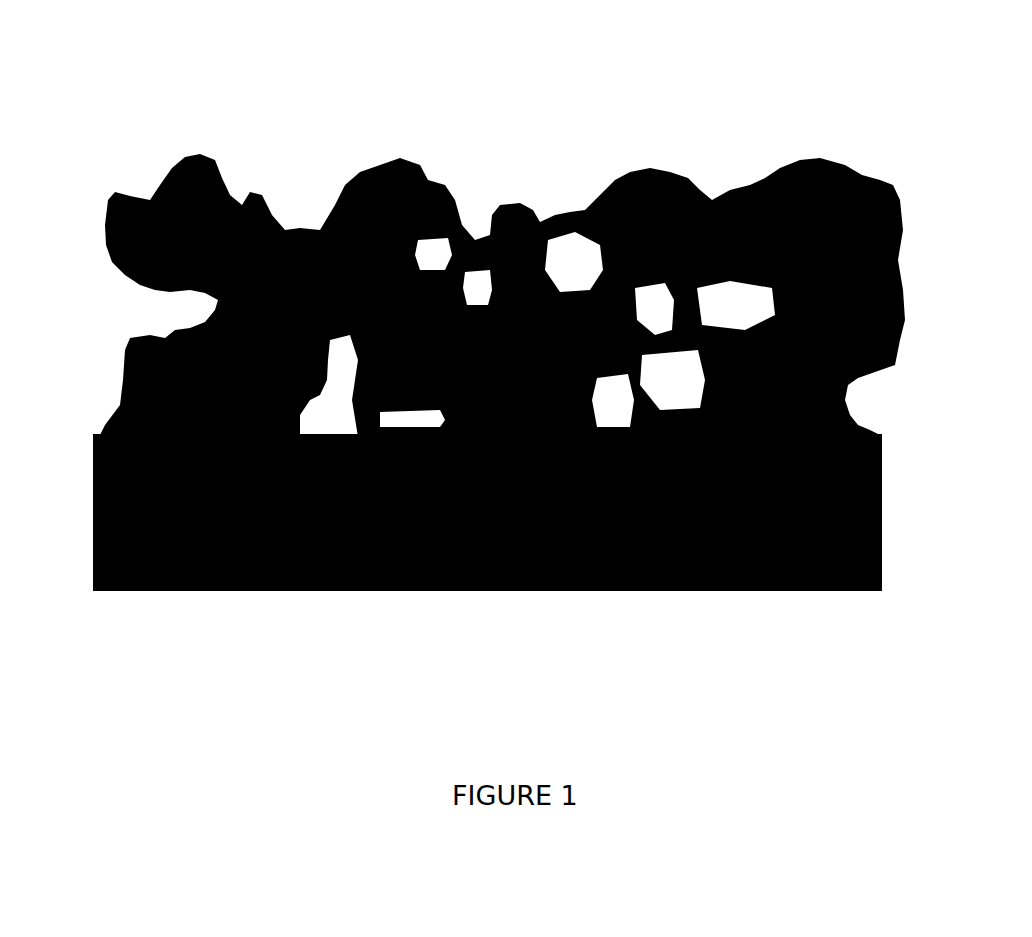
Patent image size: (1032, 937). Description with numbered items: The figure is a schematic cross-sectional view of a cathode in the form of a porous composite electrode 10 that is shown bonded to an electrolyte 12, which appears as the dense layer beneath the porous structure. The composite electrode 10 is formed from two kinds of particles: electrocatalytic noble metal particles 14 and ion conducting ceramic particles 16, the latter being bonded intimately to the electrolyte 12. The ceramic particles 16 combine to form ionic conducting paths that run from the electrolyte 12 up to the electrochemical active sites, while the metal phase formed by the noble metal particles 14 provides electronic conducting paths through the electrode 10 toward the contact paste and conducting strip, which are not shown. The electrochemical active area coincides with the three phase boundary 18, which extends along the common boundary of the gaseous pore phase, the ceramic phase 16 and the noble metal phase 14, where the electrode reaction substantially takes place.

The porous composite electrode 10 is at (483, 340).
The electrolyte 12 is at (882, 546).
The electrocatalytic noble metal particles 14 is at (447, 205).
The ion conducting ceramic particles 16 is at (408, 158).
The three phase boundary 18 is at (560, 290).